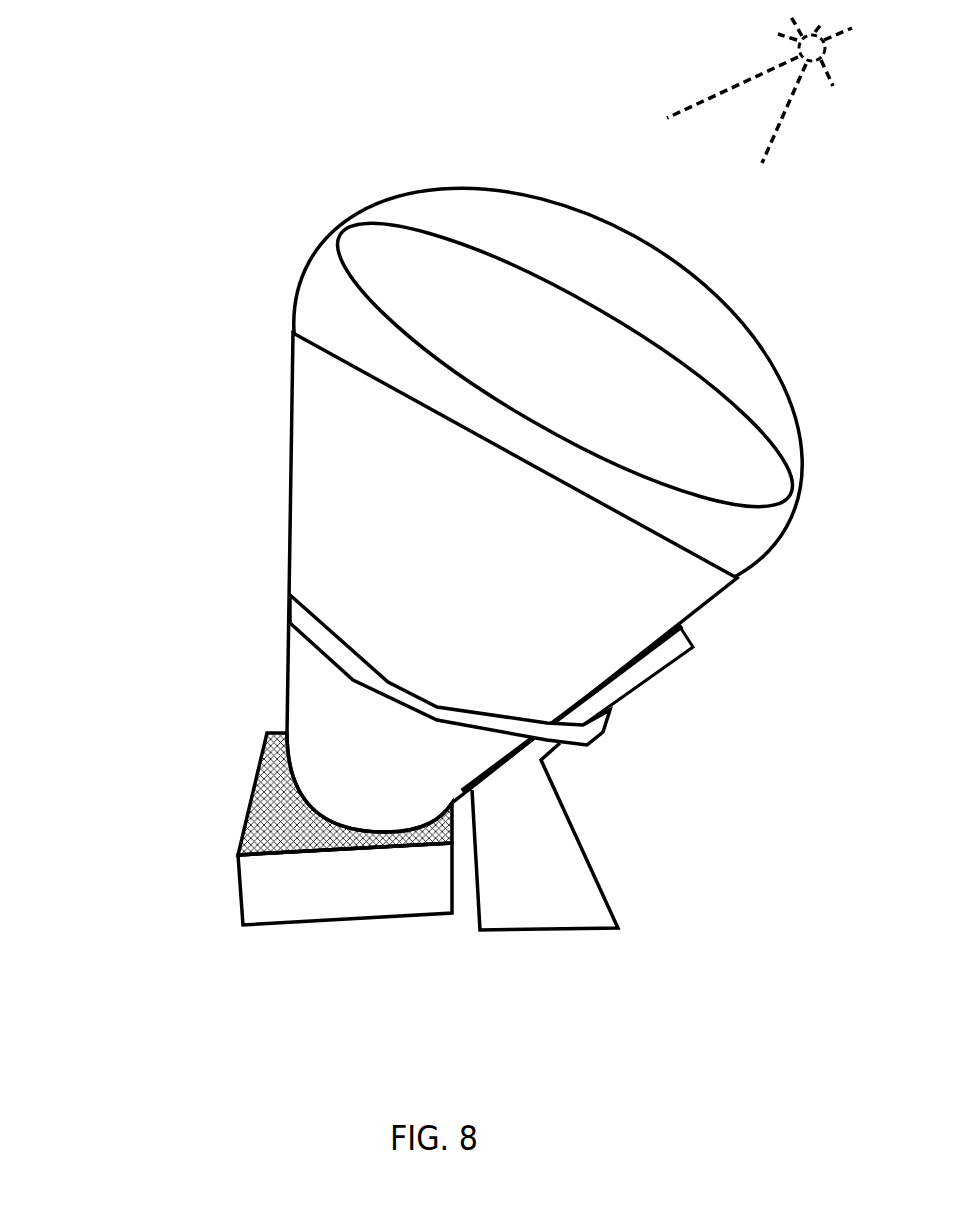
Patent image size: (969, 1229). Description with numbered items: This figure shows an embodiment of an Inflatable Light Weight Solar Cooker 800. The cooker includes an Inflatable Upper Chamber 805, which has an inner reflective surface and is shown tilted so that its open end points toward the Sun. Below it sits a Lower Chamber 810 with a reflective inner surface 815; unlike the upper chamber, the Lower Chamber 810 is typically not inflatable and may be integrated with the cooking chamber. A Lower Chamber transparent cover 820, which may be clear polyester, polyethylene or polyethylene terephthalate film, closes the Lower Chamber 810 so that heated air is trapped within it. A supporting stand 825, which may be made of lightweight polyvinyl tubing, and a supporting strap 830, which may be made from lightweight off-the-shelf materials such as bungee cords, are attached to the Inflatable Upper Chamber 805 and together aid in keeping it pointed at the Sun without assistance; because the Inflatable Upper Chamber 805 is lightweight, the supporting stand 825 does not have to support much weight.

The Inflatable Light Weight Solar Cooker 800 is at (124, 88).
The Inflatable Upper Chamber 805 is at (303, 258).
The Lower Chamber 810 is at (345, 884).
The reflective inner surface 815 is at (267, 813).
The Lower Chamber transparent cover 820 is at (386, 864).
The supporting stand 825 is at (539, 799).
The supporting strap 830 is at (624, 727).